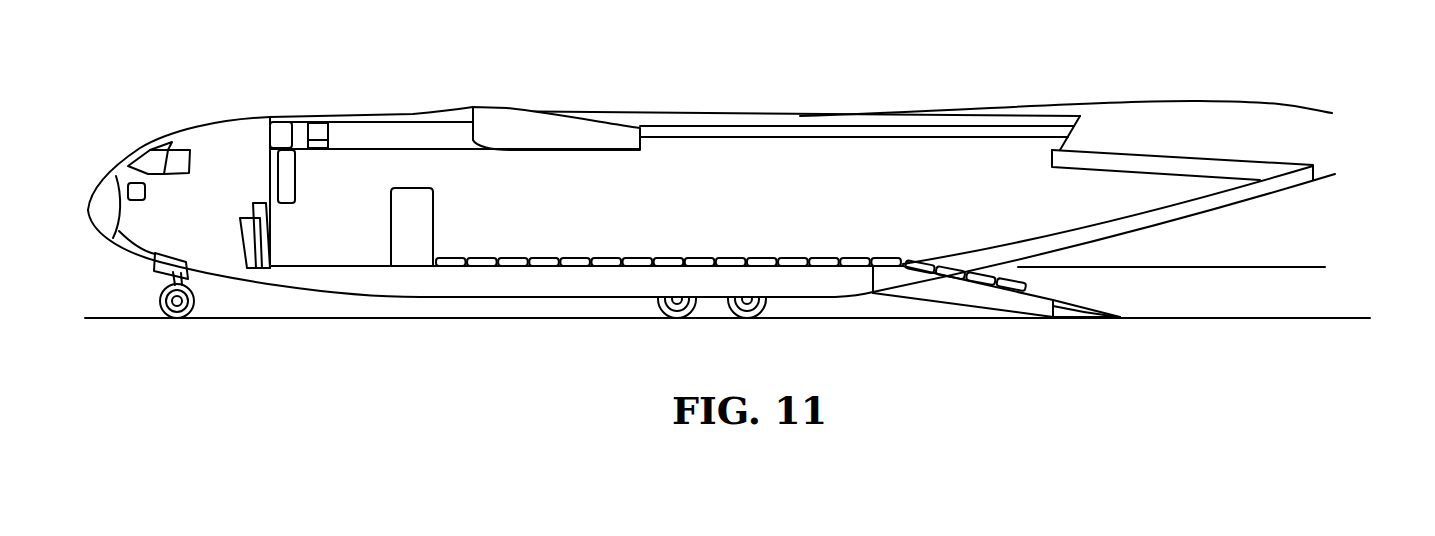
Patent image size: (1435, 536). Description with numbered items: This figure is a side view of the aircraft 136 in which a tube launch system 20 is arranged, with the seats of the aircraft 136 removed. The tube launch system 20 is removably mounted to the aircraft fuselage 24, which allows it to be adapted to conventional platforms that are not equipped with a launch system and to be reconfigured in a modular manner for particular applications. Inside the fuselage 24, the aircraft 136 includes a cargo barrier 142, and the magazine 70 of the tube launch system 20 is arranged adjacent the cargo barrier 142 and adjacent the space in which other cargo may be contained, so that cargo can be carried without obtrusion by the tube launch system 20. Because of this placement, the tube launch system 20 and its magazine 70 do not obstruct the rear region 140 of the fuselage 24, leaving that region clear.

The aircraft 136 is at (148, 112).
The cargo barrier 142 is at (287, 162).
The aircraft fuselage 24 is at (752, 152).
The magazine 70 is at (410, 243).
The tube launch system 20 is at (767, 272).
The rear region 140 is at (1262, 243).